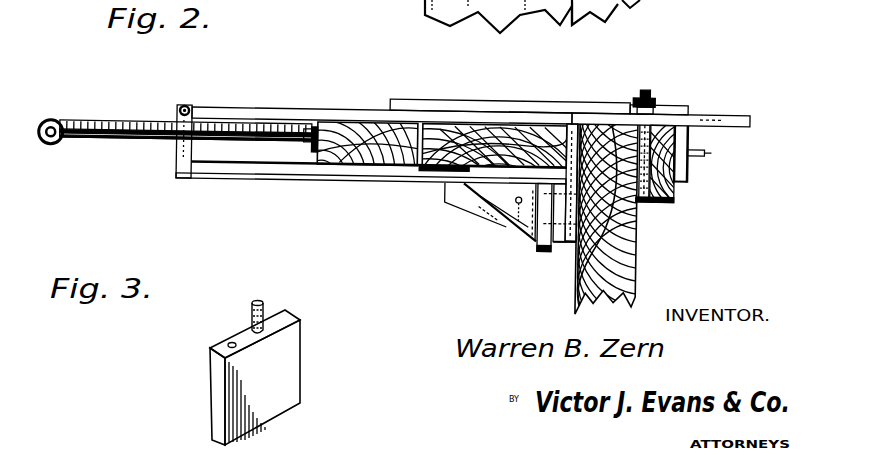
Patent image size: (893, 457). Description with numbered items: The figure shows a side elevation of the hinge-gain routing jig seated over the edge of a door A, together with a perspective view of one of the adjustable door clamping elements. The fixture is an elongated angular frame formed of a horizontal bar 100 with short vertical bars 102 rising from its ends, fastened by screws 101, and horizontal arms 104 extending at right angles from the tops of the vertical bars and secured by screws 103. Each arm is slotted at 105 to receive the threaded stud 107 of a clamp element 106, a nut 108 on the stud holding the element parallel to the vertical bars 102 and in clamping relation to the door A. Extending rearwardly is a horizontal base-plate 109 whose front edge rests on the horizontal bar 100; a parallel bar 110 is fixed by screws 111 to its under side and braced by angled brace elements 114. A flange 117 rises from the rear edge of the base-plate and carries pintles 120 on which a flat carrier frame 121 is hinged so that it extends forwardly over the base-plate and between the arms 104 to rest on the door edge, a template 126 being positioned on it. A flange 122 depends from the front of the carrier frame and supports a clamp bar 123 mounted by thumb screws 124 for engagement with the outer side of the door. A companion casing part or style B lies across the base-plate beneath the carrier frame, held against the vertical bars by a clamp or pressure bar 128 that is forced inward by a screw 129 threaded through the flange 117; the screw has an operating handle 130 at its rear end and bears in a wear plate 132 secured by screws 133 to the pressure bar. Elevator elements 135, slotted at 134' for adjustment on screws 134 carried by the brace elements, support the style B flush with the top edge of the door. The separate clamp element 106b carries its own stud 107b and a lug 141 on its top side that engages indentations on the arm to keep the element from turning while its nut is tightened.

In FIG. 2, the horizontal bar 100 is at (562, 240).
In FIG. 2, the screws 101 is at (547, 228).
In FIG. 2, the vertical bars 102 is at (572, 240).
In FIG. 2, the screws 103 is at (575, 126).
In FIG. 2, the horizontal arms 104 is at (742, 110).
In FIG. 2, the slot 105 is at (720, 110).
In FIG. 2, the clamp element 106 is at (661, 196).
In FIG. 3, the clamp element 106b is at (213, 384).
In FIG. 2, the threaded stud 107 is at (646, 83).
In FIG. 3, the stud 107b is at (261, 300).
In FIG. 2, the nut 108 is at (656, 95).
In FIG. 2, the base-plate 109 is at (231, 179).
In FIG. 2, the parallel bar 110 is at (530, 222).
In FIG. 2, the screws 111 is at (548, 172).
In FIG. 2, the angled brace elements 114 is at (505, 207).
In FIG. 2, the flange 117 is at (180, 152).
In FIG. 2, the pintles 120 is at (180, 107).
In FIG. 2, the carrier frame 121 is at (220, 108).
In FIG. 2, the flange 122 is at (685, 168).
In FIG. 2, the clamp bar 123 is at (676, 193).
In FIG. 2, the thumb screws 124 is at (706, 149).
In FIG. 2, the template 126 is at (414, 98).
In FIG. 2, the clamp or pressure bar 128 is at (349, 167).
In FIG. 2, the screw 129 is at (83, 142).
In FIG. 2, the operating handle 130 is at (53, 123).
In FIG. 2, the wear plate 132 is at (317, 126).
In FIG. 2, the screws 133 is at (310, 127).
In FIG. 2, the screws 134 is at (462, 206).
In FIG. 2, the vertical slot 134' is at (457, 235).
In FIG. 2, the elevator element 135 is at (428, 168).
In FIG. 3, the lug 141 is at (230, 342).
In FIG. 2, the door A is at (628, 260).
In FIG. 2, the casing part or style B is at (440, 130).